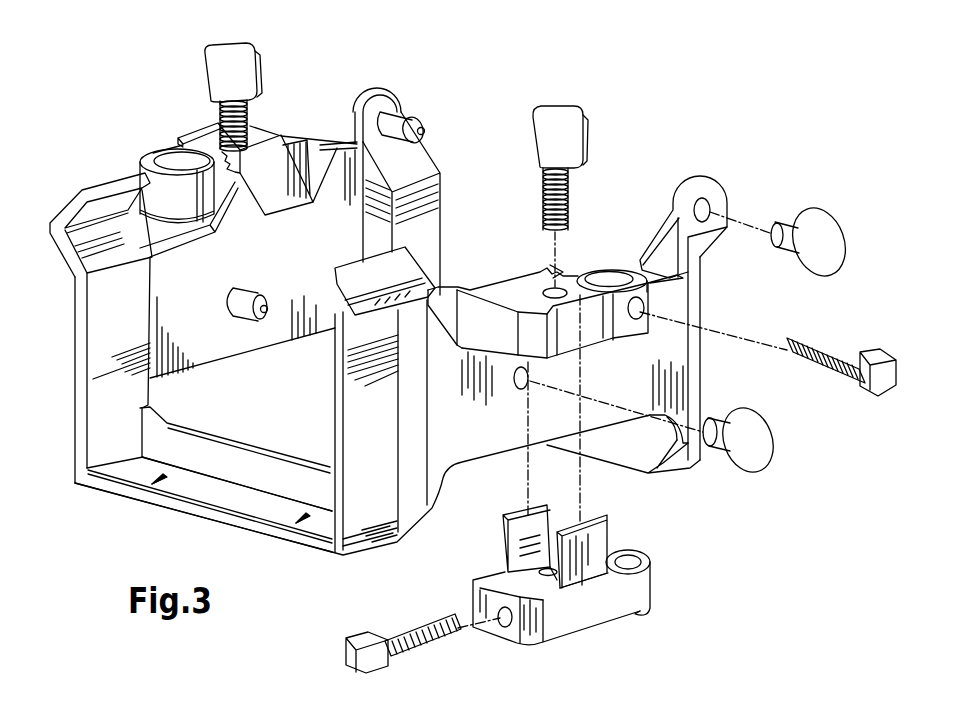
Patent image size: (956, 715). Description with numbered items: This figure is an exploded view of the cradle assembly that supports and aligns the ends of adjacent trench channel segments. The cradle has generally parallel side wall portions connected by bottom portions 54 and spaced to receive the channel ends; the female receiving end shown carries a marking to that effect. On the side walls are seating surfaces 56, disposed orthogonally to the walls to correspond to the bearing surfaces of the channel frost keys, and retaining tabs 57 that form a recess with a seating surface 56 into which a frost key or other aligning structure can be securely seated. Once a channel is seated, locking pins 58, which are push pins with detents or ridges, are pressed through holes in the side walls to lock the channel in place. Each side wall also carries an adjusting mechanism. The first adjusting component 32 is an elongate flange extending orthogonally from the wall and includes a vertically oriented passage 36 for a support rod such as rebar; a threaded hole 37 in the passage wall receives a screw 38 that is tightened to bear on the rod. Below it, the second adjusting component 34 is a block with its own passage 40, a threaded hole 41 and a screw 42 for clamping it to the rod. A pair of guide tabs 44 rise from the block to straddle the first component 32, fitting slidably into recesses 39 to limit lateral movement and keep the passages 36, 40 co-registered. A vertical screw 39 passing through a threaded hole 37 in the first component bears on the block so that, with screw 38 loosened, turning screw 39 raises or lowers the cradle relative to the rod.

The first adjusting component 32 is at (210, 150).
The second adjusting component 34 is at (567, 613).
The vertically oriented passage 36 is at (173, 160).
The threaded hole 37 is at (553, 279).
The screw 38 is at (840, 362).
The screw 39 is at (233, 63).
The passage 40 is at (620, 560).
The threaded hole 41 is at (503, 617).
The screw 42 is at (417, 643).
The guide tabs 44 is at (262, 165).
The bottom portions 54 is at (140, 473).
The seating surfaces 56 is at (425, 168).
The retaining tabs 57 is at (77, 203).
The locking pins 58 is at (400, 118).